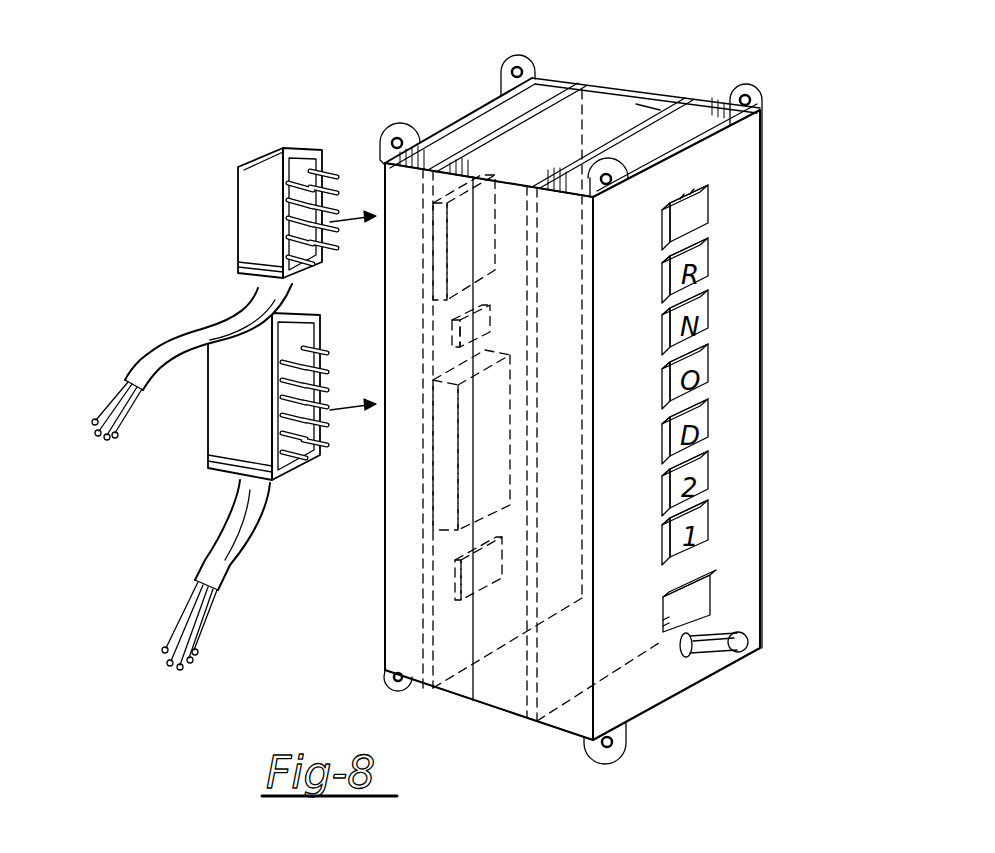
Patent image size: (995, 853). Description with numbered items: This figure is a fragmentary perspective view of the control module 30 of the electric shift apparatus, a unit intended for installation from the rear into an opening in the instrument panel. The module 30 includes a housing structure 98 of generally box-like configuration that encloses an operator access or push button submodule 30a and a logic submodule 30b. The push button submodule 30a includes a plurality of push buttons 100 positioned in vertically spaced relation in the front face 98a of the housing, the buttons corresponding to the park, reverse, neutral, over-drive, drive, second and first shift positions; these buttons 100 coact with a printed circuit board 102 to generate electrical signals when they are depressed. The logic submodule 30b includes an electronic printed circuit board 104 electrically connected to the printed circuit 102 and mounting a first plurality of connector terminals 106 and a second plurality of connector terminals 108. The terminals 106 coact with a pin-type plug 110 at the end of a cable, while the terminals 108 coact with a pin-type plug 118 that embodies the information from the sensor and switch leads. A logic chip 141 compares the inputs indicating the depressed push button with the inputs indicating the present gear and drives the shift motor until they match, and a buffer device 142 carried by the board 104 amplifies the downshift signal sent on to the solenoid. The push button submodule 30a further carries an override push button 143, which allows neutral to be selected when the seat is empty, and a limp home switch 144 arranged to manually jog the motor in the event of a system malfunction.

The control module 30 is at (824, 174).
The push button submodule 30a is at (698, 104).
The logic submodule 30b is at (602, 70).
The housing structure 98 is at (402, 614).
The front face 98a is at (750, 400).
The push buttons 100 is at (712, 213).
The printed circuit board 102 is at (647, 108).
The electronic printed circuit board 104 is at (572, 49).
The first plurality of connector terminals 106 is at (452, 468).
The second plurality of connector terminals 108 is at (460, 257).
The pin-type plug 110 is at (218, 440).
The pin-type plug 118 is at (278, 150).
The logic chip 141 is at (445, 327).
The buffer device 142 is at (452, 574).
The override push button 143 is at (712, 600).
The limp home switch 144 is at (718, 655).